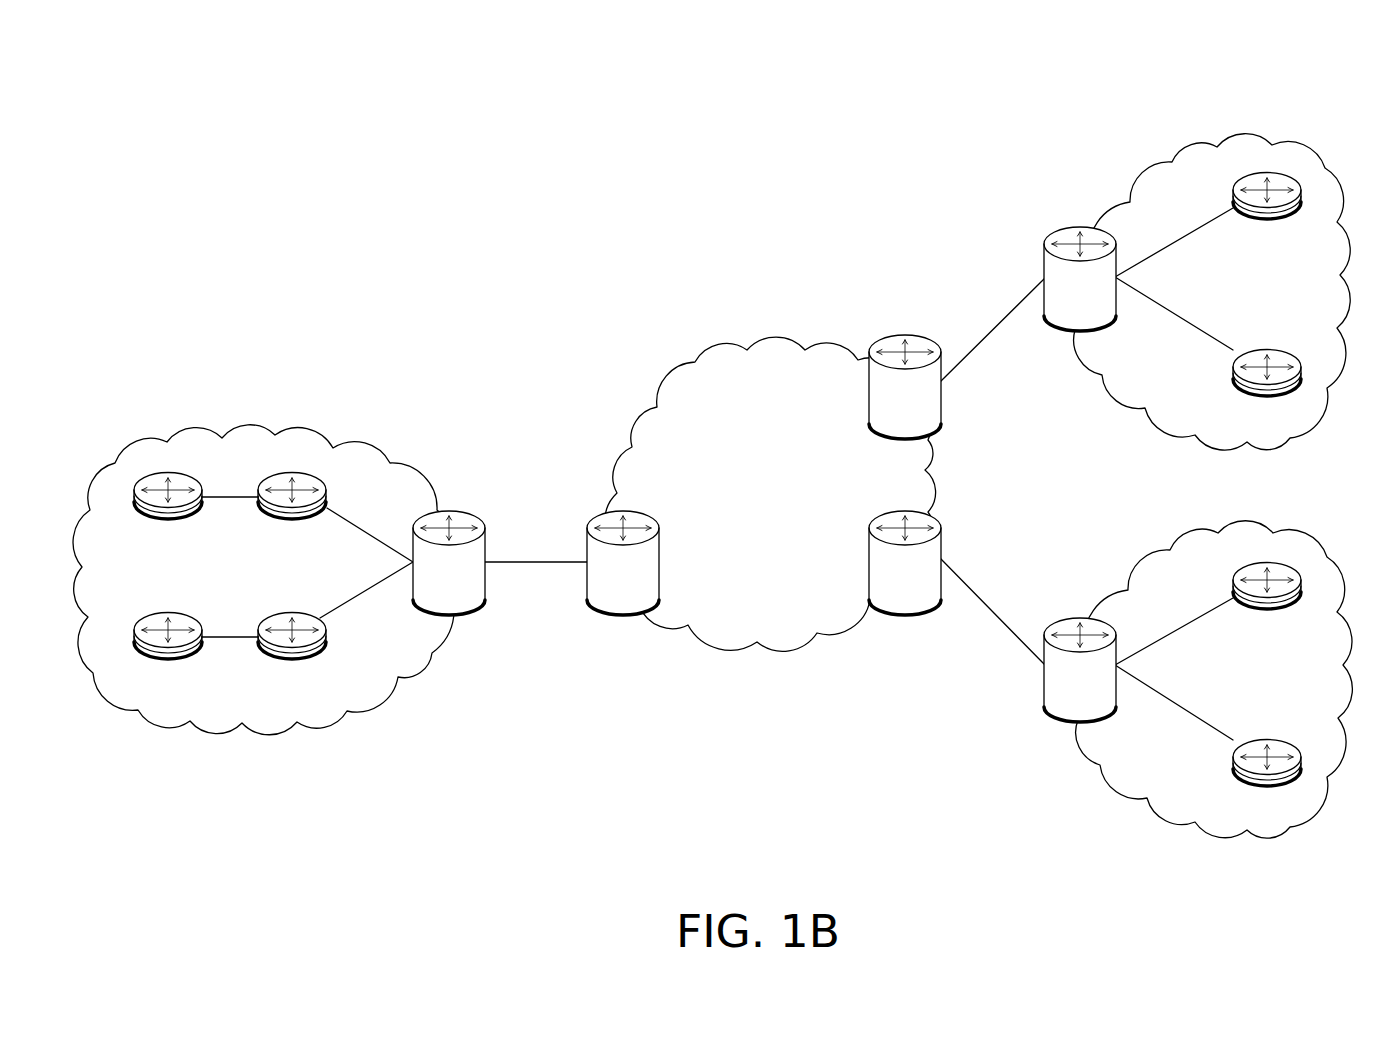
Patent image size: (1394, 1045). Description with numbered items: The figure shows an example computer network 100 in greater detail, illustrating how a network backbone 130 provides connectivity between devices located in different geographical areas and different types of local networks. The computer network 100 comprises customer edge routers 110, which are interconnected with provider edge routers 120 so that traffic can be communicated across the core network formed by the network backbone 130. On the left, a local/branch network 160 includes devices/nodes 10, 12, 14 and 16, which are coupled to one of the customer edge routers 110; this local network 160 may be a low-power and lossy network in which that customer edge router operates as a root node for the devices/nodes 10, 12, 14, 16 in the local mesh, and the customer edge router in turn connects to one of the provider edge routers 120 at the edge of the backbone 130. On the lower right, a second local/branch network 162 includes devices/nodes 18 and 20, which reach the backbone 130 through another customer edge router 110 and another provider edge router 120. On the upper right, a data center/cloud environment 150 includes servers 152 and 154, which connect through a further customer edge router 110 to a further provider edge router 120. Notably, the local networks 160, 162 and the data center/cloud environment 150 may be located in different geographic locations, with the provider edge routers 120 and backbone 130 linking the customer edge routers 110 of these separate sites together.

The computer network 100 is at (1303, 67).
The device/node 10 is at (168, 514).
The device/node 12 is at (292, 514).
The device/node 14 is at (168, 654).
The device/node 16 is at (292, 654).
The device/node 18 is at (1267, 779).
The device/node 20 is at (1267, 603).
The customer edge router 110 is at (432, 598).
The provider edge router 120 is at (606, 600).
The network backbone 130 is at (788, 518).
The data center/cloud environment 150 is at (1179, 145).
The server 152 is at (1267, 214).
The server 154 is at (1267, 390).
The local/branch network 160 is at (306, 417).
The local/branch network 162 is at (1093, 766).